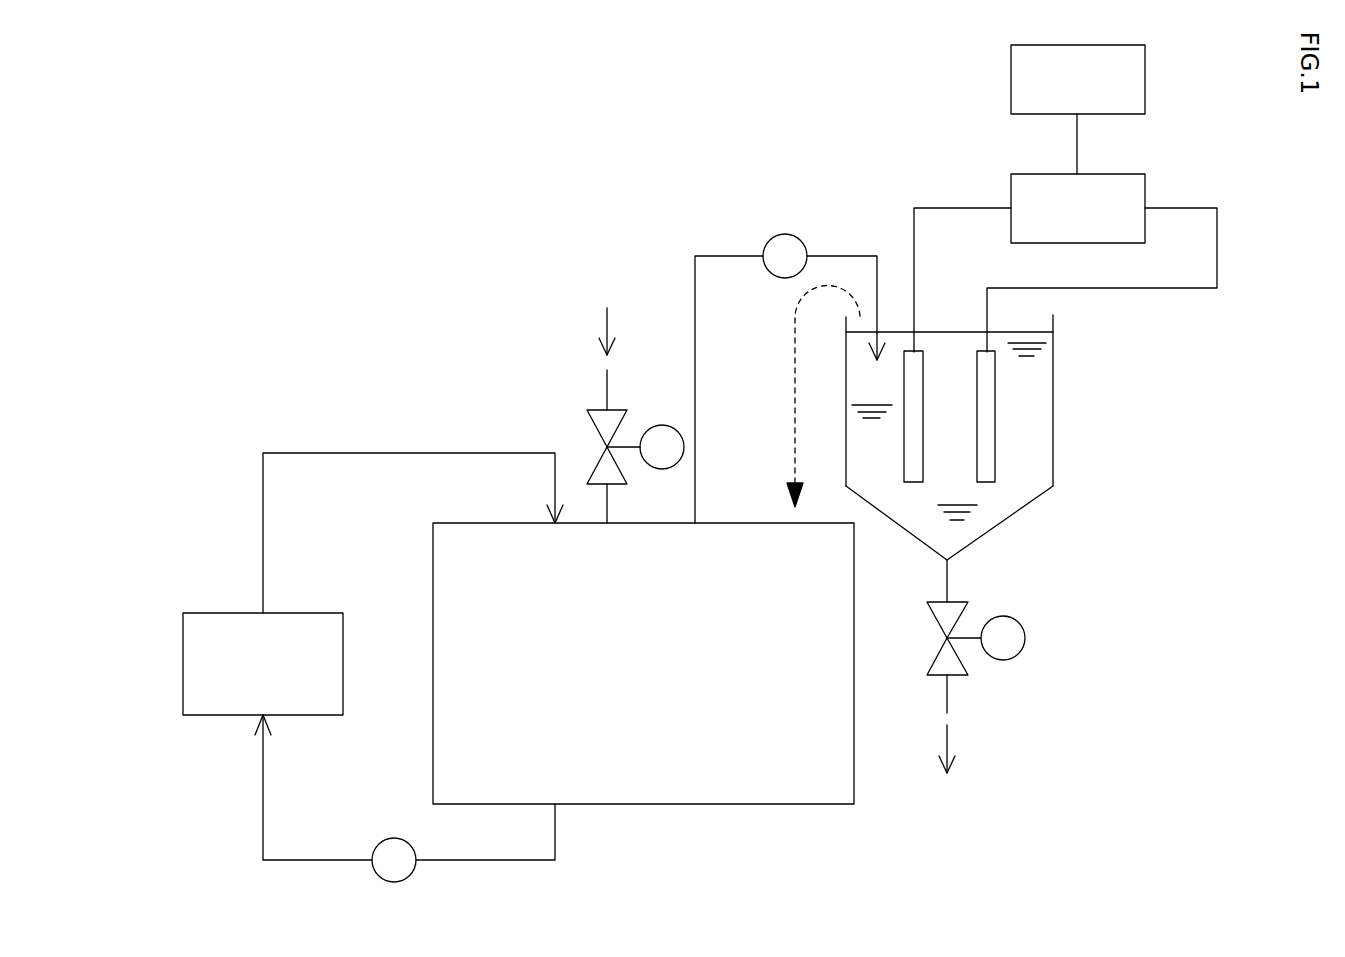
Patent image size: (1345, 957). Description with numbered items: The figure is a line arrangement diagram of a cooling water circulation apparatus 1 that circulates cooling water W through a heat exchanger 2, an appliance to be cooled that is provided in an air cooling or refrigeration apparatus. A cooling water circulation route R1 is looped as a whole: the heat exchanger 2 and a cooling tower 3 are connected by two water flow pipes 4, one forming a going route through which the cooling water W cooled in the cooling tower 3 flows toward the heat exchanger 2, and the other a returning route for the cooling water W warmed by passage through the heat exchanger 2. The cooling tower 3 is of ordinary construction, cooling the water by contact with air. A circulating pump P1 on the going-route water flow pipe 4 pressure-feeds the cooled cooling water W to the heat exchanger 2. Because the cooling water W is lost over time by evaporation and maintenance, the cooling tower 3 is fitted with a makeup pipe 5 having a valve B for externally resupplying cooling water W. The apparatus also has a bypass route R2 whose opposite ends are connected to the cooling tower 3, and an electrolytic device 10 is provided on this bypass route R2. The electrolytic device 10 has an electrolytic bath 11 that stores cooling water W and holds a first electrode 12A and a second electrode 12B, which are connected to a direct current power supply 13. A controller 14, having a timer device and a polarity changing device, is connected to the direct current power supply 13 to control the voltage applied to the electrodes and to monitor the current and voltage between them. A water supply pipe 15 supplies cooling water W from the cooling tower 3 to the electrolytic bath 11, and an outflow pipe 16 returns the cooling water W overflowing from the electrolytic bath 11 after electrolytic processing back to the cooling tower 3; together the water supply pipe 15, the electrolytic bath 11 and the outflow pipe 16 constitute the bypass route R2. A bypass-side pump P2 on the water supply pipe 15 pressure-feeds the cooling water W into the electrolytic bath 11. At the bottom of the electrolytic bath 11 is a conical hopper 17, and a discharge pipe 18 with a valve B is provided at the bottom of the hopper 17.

The cooling water circulation apparatus 1 is at (1198, 64).
The heat exchanger 2 is at (183, 656).
The cooling tower 3 is at (684, 804).
The water flow pipes 4 is at (383, 452).
The makeup pipe 5 is at (605, 388).
The electrolytic device 10 is at (1113, 498).
The electrolytic bath 11 is at (1053, 408).
The first electrode 12A is at (990, 457).
The second electrode 12B is at (912, 482).
The direct current power supply 13 is at (1110, 172).
The controller 14 is at (1145, 72).
The water supply pipe 15 is at (720, 255).
The outflow pipe 16 is at (793, 356).
The conical hopper 17 is at (1003, 528).
The discharge pipe 18 is at (950, 700).
The valve B is at (965, 603).
The circulating pump P1 is at (400, 880).
The bypass-side pump P2 is at (787, 233).
The cooling water circulation route R1 is at (263, 508).
The bypass route R2 is at (848, 255).
The cooling water W is at (1046, 348).